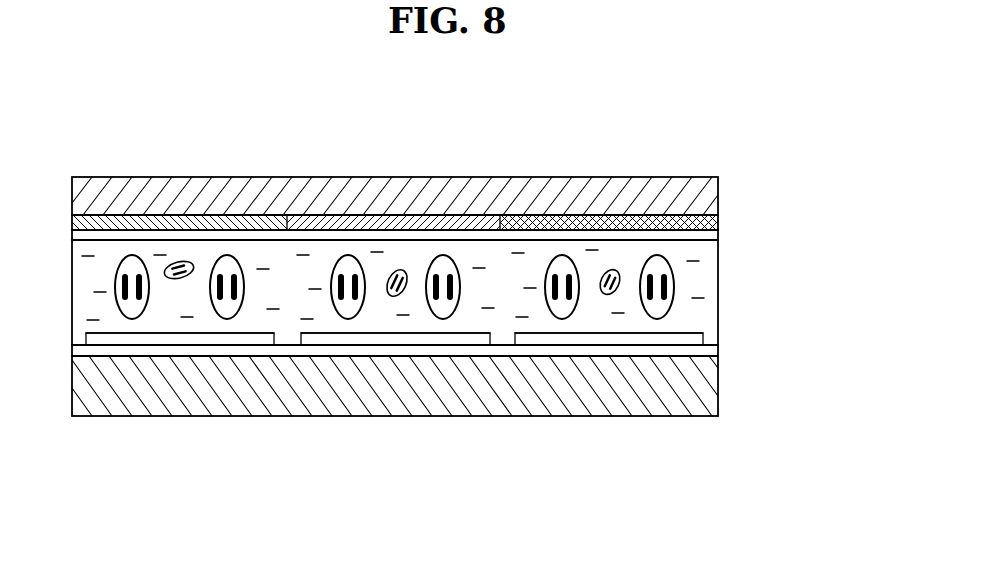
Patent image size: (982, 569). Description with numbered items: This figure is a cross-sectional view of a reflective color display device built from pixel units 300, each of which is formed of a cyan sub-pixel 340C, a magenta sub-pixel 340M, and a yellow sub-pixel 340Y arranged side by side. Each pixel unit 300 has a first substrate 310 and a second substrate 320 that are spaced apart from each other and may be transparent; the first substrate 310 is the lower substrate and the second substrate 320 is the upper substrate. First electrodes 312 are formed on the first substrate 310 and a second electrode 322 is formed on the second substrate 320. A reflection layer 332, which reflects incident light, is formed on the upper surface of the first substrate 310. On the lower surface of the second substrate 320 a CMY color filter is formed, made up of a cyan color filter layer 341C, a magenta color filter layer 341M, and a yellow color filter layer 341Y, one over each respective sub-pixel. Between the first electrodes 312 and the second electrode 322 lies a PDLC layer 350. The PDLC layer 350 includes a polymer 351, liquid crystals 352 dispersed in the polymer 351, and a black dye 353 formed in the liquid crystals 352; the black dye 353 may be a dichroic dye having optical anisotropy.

The pixel unit 300 is at (735, 160).
The first substrate 310 is at (718, 383).
The first electrode 312 is at (613, 433).
The second substrate 320 is at (718, 191).
The second electrode 322 is at (718, 232).
The reflection layer 332 is at (718, 345).
The cyan sub-pixel 340C is at (283, 125).
The magenta sub-pixel 340M is at (290, 125).
The yellow sub-pixel 340Y is at (504, 125).
The cyan color filter layer 341C is at (176, 222).
The magenta color filter layer 341M is at (399, 222).
The yellow color filter layer 341Y is at (610, 222).
The PDLC layer 350 is at (804, 255).
The polymer 351 is at (713, 263).
The liquid crystals 352 is at (700, 310).
The black dye 353 is at (667, 283).